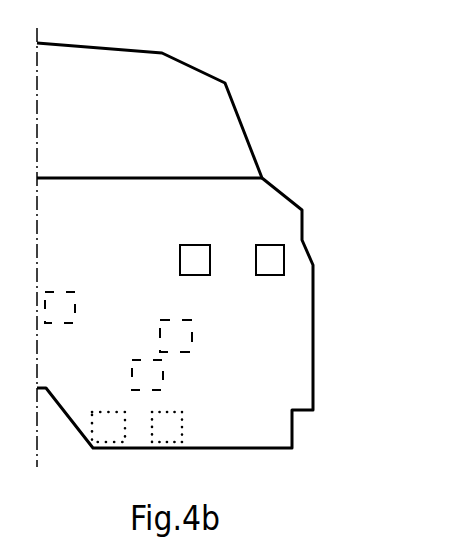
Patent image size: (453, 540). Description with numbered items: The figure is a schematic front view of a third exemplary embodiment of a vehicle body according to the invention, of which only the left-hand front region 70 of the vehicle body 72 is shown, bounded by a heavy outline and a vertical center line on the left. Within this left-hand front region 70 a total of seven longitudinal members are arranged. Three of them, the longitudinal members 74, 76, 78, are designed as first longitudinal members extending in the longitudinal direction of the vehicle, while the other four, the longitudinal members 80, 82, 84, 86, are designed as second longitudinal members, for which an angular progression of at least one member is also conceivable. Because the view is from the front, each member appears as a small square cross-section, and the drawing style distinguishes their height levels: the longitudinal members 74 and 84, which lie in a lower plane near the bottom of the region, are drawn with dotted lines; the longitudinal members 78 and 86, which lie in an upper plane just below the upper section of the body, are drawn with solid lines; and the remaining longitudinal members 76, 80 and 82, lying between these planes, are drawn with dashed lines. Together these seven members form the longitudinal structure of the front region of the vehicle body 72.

The left-hand front region 70 is at (333, 303).
The vehicle body 72 is at (268, 75).
The longitudinal member 74 is at (102, 418).
The longitudinal member 76 is at (183, 332).
The longitudinal member 78 is at (192, 252).
The longitudinal member 80 is at (68, 308).
The longitudinal member 82 is at (153, 375).
The longitudinal member 84 is at (173, 430).
The longitudinal member 86 is at (265, 252).